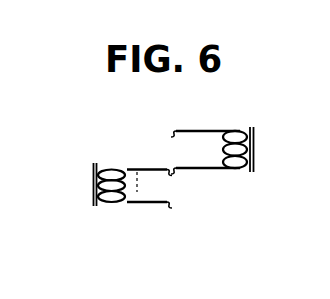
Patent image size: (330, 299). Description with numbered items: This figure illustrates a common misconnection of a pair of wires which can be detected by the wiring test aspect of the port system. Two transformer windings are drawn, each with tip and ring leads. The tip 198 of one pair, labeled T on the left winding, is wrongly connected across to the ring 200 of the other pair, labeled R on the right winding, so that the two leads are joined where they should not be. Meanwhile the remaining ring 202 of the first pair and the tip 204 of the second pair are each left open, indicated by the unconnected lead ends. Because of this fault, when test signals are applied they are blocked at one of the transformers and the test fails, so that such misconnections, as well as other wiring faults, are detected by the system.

The tip 198 is at (132, 169).
The ring 202 is at (135, 203).
The tip 204 is at (213, 131).
The ring 200 is at (212, 168).